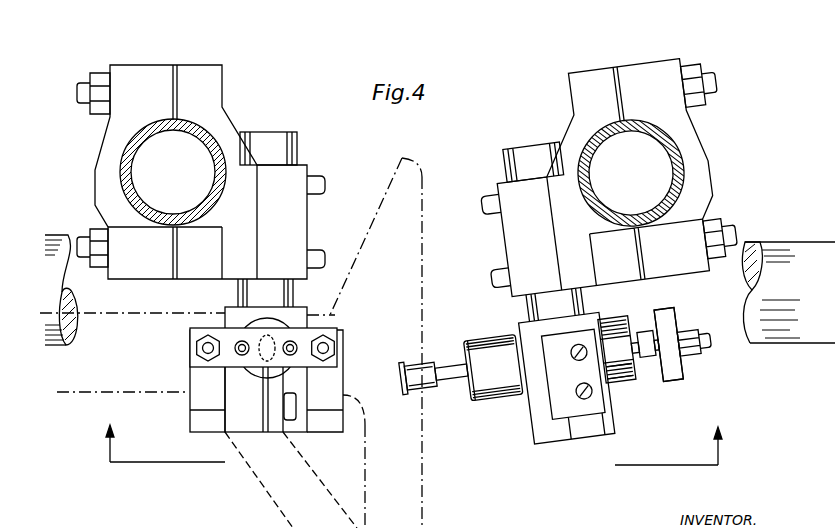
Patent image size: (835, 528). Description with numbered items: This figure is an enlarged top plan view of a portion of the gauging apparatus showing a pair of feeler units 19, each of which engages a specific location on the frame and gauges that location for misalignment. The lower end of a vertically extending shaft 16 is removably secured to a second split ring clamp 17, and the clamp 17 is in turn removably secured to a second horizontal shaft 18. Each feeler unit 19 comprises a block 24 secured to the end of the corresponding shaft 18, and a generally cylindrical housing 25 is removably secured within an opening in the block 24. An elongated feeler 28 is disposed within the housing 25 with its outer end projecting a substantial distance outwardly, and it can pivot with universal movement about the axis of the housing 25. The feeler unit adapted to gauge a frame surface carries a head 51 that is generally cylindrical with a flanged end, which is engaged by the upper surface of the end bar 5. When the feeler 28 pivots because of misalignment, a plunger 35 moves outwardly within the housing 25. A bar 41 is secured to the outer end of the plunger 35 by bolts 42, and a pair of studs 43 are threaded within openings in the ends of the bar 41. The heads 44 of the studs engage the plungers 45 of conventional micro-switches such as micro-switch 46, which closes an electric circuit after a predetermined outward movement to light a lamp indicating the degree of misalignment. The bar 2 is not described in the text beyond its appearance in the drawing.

The bar 2 is at (128, 393).
The end bar 5 is at (445, 500).
The vertically extending shaft 16 is at (213, 130).
The second split ring clamp 17 is at (212, 68).
The second horizontal shaft 18 is at (275, 132).
The feeler unit 19 is at (356, 289).
The block 24 is at (237, 306).
The cylindrical housing 25 is at (487, 340).
The feeler 28 is at (446, 368).
The plunger 35 is at (295, 318).
The bar 41 is at (192, 360).
The bolts 42 is at (242, 356).
The studs 43 is at (203, 345).
The heads 44 is at (645, 335).
The plungers 45 is at (637, 360).
The micro-switch 46 is at (615, 340).
The head 51 is at (415, 367).